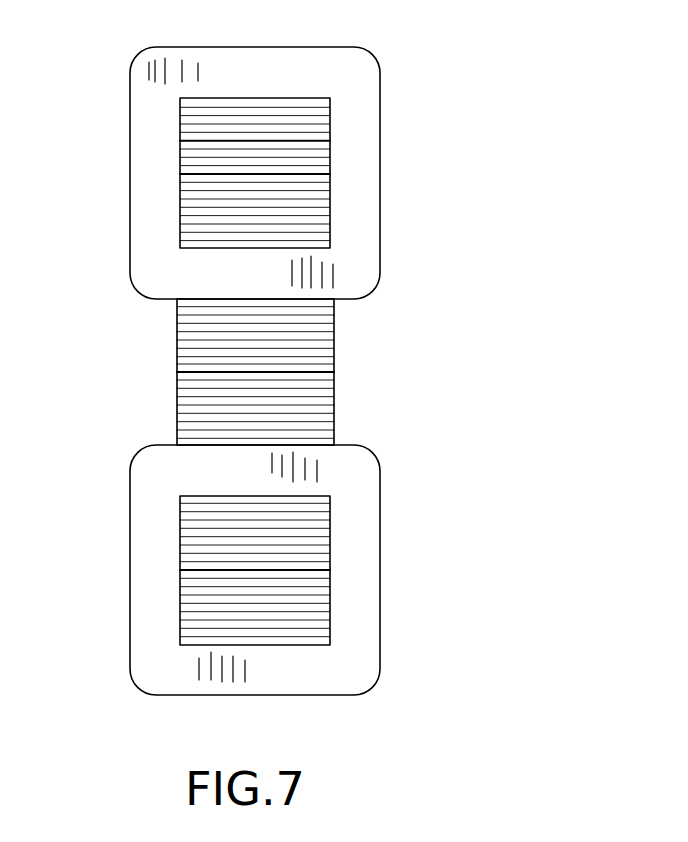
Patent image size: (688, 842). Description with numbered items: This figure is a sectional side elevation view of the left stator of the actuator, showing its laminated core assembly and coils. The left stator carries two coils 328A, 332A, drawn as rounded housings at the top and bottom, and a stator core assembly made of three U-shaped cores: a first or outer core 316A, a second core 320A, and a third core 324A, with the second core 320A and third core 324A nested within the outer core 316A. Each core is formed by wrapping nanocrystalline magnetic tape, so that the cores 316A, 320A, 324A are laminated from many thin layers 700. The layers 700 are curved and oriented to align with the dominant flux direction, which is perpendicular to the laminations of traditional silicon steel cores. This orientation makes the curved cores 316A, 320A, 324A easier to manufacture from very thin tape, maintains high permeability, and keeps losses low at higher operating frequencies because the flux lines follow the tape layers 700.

The layers 700 is at (187, 144).
The first or outer core 316A is at (320, 97).
The second core 320A is at (330, 212).
The third core 324A is at (334, 408).
The coil 328A is at (380, 130).
The coil 332A is at (380, 562).